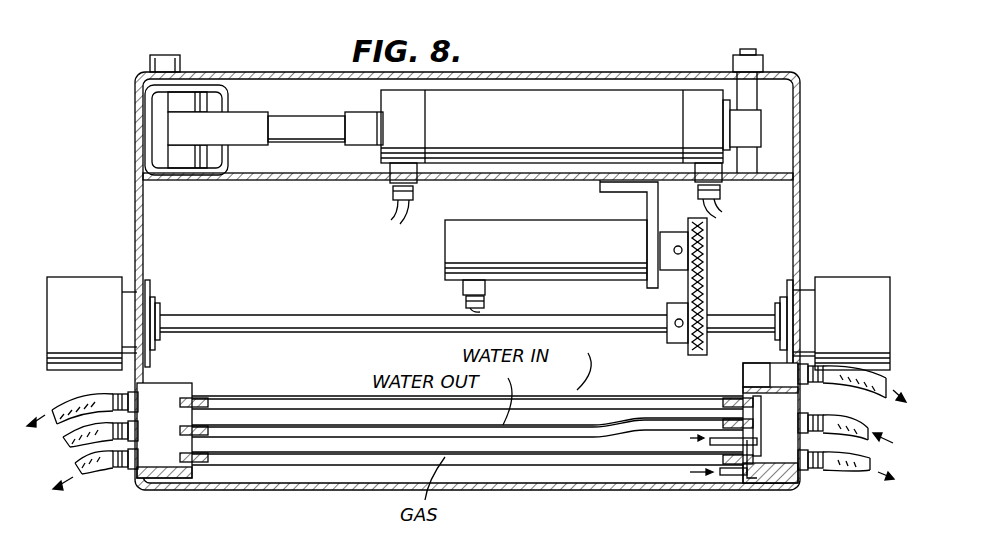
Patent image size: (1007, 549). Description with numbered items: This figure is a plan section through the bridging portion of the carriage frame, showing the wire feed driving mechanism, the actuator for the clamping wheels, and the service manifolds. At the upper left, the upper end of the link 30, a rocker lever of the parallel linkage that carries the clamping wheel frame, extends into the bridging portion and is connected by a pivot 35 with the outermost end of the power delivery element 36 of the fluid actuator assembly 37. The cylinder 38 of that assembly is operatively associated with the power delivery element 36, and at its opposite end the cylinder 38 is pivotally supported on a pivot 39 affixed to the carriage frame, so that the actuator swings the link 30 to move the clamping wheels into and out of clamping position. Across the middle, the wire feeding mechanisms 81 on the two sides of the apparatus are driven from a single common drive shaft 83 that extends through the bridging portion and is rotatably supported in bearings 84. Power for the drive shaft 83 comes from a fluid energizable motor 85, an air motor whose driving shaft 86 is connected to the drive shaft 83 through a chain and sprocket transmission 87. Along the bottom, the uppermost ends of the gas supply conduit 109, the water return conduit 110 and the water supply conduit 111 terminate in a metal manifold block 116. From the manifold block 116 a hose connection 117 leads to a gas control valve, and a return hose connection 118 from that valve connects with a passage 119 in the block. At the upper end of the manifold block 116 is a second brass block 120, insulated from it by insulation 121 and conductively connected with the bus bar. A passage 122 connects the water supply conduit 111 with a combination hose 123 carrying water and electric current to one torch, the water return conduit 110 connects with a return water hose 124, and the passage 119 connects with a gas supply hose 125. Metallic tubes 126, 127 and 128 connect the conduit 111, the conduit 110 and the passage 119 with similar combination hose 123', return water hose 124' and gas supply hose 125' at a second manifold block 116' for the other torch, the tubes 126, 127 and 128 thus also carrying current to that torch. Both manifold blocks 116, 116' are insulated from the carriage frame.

The link 30 is at (148, 132).
The pivot 35 is at (184, 114).
The power delivery element 36 is at (288, 126).
The fluid actuator assembly 37 is at (480, 166).
The cylinder 38 is at (555, 154).
The pivot 39 is at (747, 112).
The wire feeding mechanism 81 is at (105, 250).
The drive shaft 83 is at (322, 316).
The bearings 84 is at (151, 294).
The fluid energizable motor 85 is at (546, 266).
The driving shaft 86 is at (673, 236).
The chain and sprocket transmission 87 is at (708, 258).
The gas supply conduit 109 is at (778, 475).
The water return conduit 110 is at (803, 437).
The water supply conduit 111 is at (800, 400).
The manifold block 116 is at (797, 448).
The manifold block 116' is at (183, 456).
The hose connection 117 is at (713, 441).
The return hose connection 118 is at (740, 476).
The passage 119 is at (763, 475).
The brass block 120 is at (766, 368).
The insulation 121 is at (743, 389).
The passage 122 is at (768, 378).
The combination hose 123 is at (864, 358).
The combination hose 123' is at (82, 400).
The return water hose 124 is at (863, 424).
The return water hose 124' is at (86, 473).
The gas supply hose 125 is at (858, 479).
The gas supply hose 125' is at (95, 490).
The metallic tube 126 is at (275, 403).
The metallic tube 127 is at (301, 431).
The metallic tube 128 is at (583, 458).